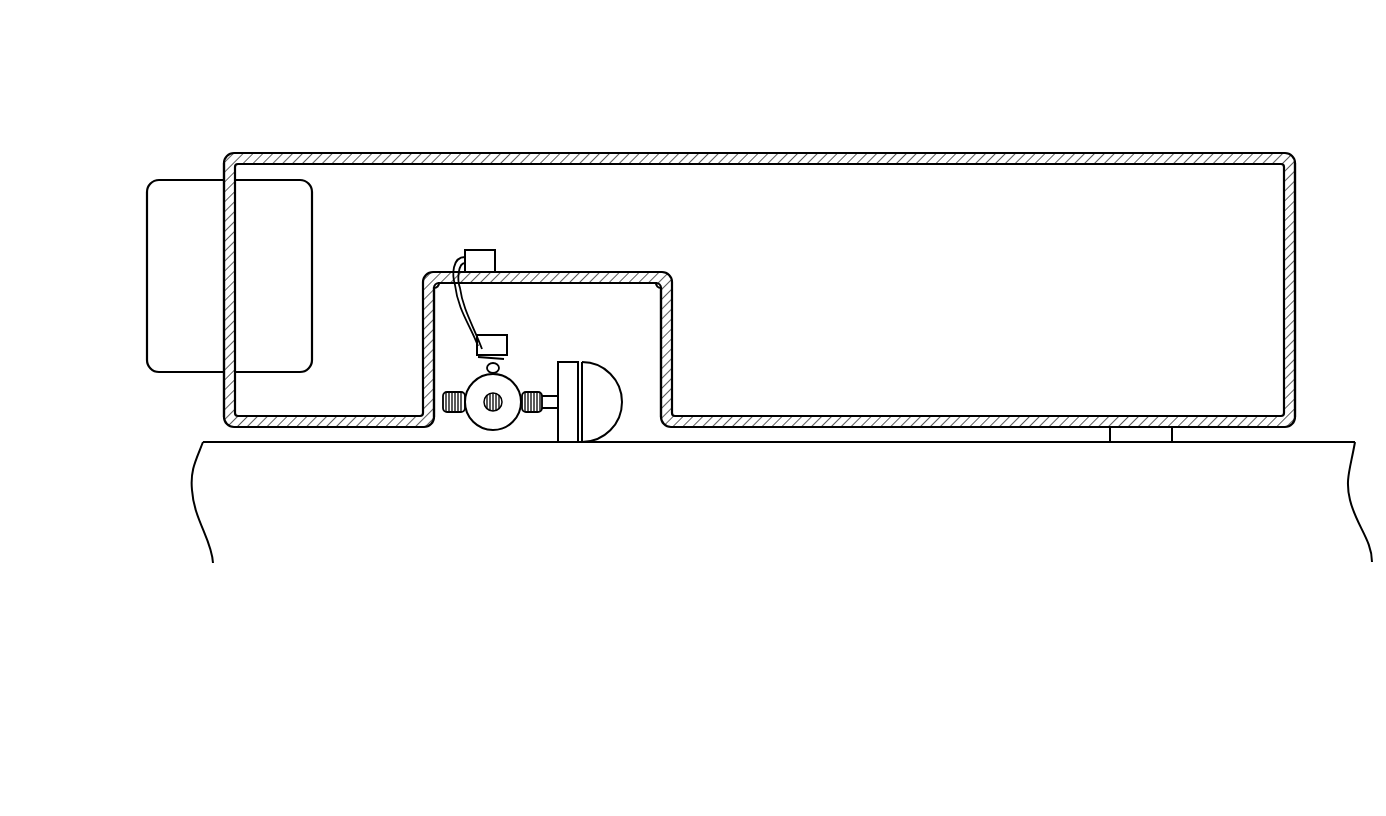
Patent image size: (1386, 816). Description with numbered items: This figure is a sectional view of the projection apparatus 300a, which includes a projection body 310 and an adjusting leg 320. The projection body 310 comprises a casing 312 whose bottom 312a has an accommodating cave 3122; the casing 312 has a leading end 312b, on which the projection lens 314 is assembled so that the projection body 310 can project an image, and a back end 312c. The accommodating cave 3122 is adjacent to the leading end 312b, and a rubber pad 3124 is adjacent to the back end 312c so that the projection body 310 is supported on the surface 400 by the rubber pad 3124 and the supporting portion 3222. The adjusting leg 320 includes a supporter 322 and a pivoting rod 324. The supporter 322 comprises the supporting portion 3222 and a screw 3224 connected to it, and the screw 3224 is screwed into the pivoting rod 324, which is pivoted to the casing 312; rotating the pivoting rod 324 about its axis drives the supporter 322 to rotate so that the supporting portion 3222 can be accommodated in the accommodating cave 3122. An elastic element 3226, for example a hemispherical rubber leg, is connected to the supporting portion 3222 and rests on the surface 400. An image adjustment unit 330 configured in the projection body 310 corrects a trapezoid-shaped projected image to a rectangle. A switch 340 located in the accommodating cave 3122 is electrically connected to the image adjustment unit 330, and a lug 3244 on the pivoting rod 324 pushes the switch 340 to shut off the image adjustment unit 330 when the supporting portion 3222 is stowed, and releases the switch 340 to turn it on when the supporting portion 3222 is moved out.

The projection apparatus 300a is at (1381, 684).
The projection body 310 is at (253, 88).
The casing 312 is at (258, 153).
The bottom 312a is at (741, 428).
The leading end 312b is at (224, 387).
The back end 312c is at (1297, 208).
The accommodating cave 3122 is at (638, 394).
The rubber pad 3124 is at (1148, 435).
The projection lens 314 is at (202, 192).
The adjusting leg 320 is at (470, 592).
The supporter 322 is at (645, 548).
The supporting portion 3222 is at (575, 430).
The screw 3224 is at (547, 404).
The elastic element 3226 is at (598, 424).
The pivoting rod 324 is at (500, 424).
The lug 3244 is at (487, 377).
The image adjustment unit 330 is at (481, 260).
The switch 340 is at (477, 357).
The surface 400 is at (205, 440).